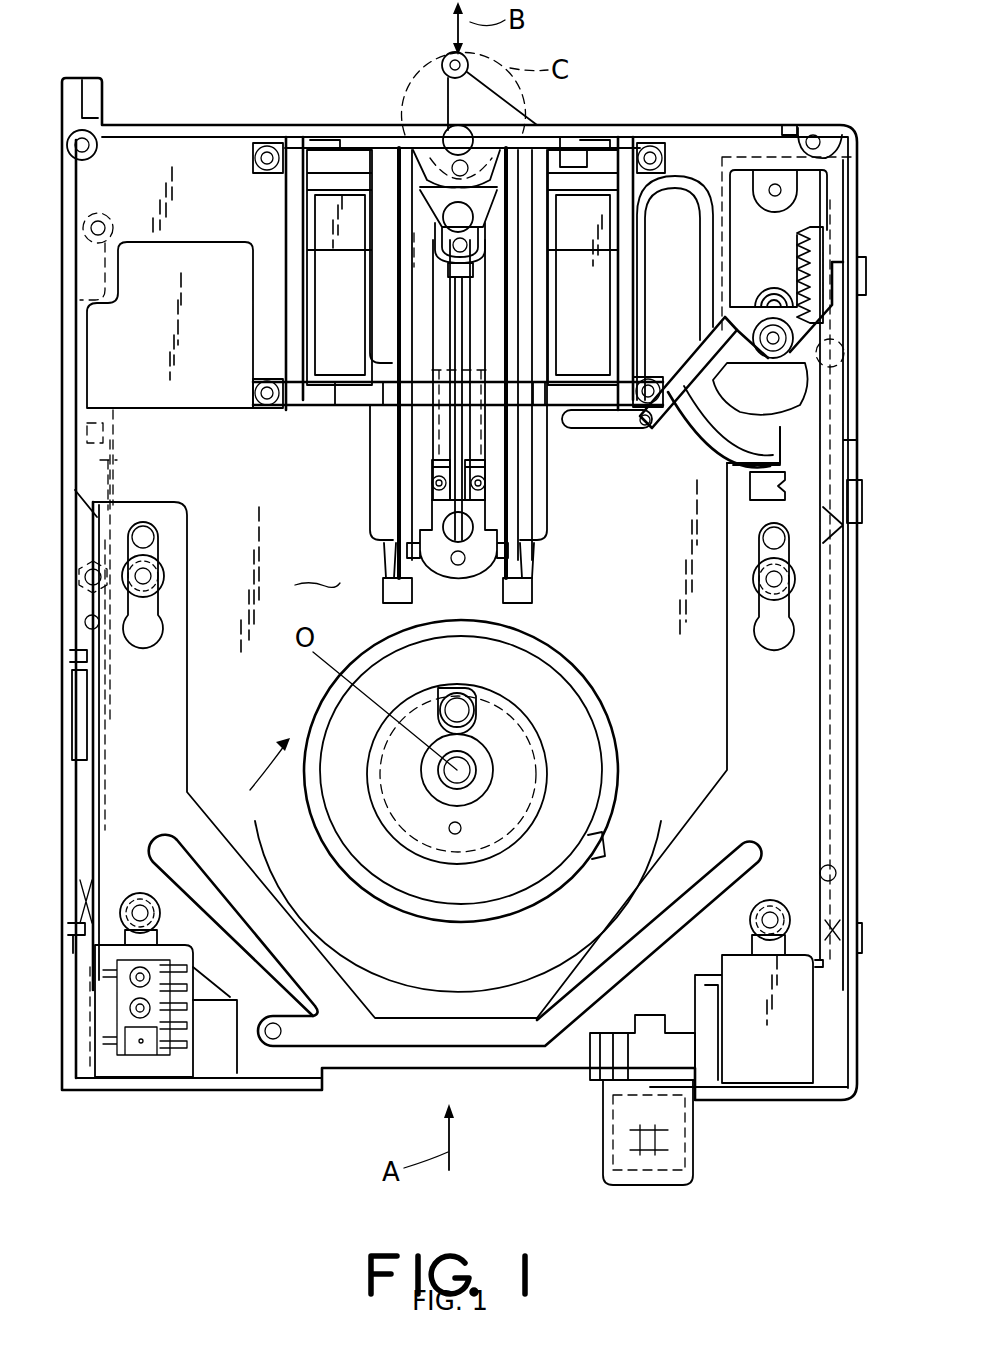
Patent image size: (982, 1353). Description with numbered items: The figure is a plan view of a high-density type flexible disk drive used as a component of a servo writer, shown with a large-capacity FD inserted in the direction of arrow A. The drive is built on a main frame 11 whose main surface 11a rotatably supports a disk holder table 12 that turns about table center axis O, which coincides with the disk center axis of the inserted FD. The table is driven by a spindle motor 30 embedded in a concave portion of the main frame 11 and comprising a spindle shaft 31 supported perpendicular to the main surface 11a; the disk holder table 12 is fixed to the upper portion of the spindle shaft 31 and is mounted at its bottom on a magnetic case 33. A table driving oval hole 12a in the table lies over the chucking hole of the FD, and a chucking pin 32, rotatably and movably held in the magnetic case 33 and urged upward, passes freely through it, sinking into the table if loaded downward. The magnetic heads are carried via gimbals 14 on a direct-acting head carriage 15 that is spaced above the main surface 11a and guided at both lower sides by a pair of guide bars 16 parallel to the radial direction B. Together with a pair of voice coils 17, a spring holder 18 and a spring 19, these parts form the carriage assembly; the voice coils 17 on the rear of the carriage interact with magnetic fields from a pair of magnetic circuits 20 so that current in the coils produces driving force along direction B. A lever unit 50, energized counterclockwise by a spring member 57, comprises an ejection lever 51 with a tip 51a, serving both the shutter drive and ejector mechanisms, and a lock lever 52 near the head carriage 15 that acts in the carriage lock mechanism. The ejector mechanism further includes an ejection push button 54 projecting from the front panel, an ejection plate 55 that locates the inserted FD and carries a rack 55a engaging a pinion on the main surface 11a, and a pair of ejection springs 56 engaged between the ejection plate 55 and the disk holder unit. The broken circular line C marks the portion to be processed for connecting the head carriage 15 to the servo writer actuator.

The main frame 11 is at (212, 1092).
The main surface 11a is at (315, 568).
The disk holder table 12 is at (520, 727).
The table driving oval hole 12a is at (453, 700).
The gimbals 14 is at (480, 503).
The head carriage 15 is at (480, 450).
The guide bars 16 is at (385, 503).
The voice coils 17 is at (313, 253).
The spring holder 18 is at (432, 197).
The spring 19 is at (455, 345).
The magnetic circuits 20 is at (310, 405).
The spindle motor 30 is at (252, 779).
The spindle shaft 31 is at (477, 767).
The chucking pin 32 is at (466, 698).
The magnetic case 33 is at (458, 885).
The lever unit 50 is at (690, 345).
The ejection lever 51 is at (642, 424).
The tip 51a is at (570, 415).
The lock lever 52 is at (672, 195).
The ejection push button 54 is at (645, 1187).
The ejection plate 55 is at (743, 732).
The rack 55a is at (808, 230).
The ejection springs 56 is at (78, 662).
The spring member 57 is at (755, 364).